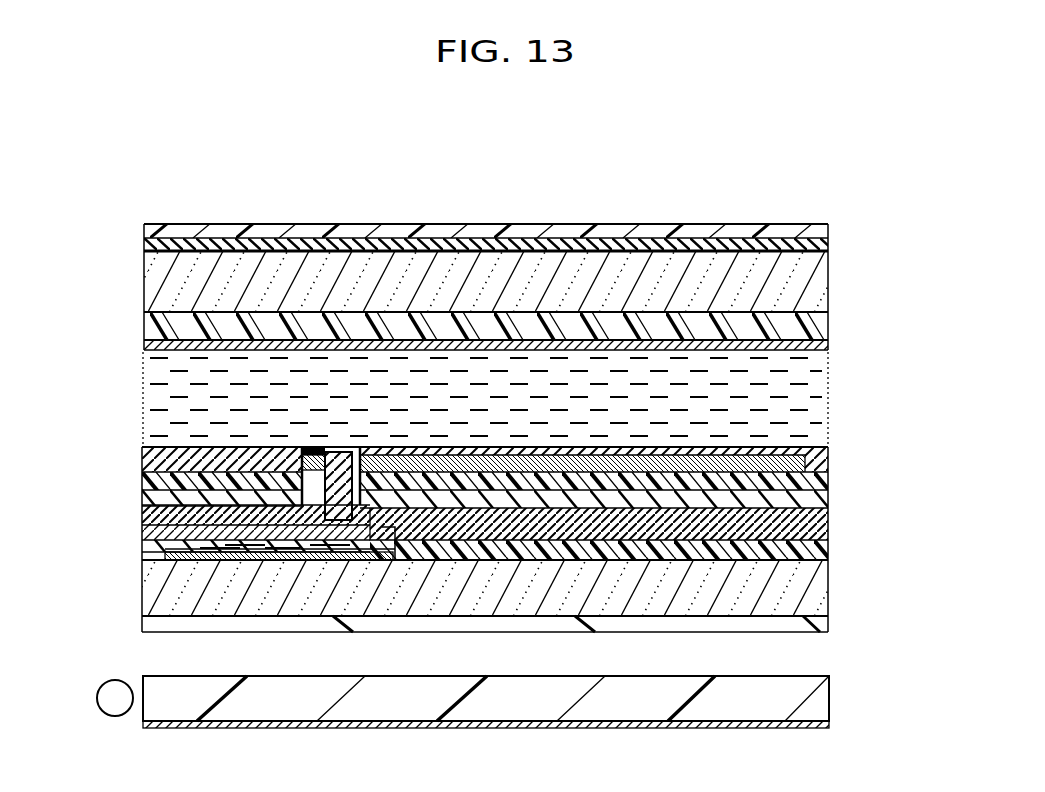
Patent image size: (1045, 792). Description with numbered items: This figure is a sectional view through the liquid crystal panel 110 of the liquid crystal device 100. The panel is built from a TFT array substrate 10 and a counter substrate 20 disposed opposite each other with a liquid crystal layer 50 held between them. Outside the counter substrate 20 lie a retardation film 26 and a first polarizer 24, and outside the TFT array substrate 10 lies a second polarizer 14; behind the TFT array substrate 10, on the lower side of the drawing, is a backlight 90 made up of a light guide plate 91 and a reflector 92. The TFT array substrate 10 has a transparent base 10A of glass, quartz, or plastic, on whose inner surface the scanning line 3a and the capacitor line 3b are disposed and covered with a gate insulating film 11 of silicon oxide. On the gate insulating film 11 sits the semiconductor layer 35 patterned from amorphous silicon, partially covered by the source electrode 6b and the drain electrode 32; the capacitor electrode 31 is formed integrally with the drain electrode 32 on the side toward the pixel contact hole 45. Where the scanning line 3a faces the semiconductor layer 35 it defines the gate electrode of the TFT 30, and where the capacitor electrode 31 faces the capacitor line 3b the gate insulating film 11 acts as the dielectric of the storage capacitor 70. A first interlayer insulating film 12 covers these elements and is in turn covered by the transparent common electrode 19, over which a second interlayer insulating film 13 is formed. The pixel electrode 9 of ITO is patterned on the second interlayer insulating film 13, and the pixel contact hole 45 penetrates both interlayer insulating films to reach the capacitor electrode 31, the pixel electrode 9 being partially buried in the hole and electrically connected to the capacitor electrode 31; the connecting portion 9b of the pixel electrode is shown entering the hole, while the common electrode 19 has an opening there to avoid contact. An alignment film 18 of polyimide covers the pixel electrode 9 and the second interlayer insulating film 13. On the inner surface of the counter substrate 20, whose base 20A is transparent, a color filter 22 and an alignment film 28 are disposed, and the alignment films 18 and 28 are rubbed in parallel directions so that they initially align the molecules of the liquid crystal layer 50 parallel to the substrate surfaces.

The liquid crystal device 100 is at (717, 226).
The liquid crystal panel 110 is at (91, 282).
The counter substrate 20 is at (136, 225).
The first polarizer 24 is at (830, 230).
The retardation film 26 is at (830, 244).
The base 20A is at (830, 289).
The color filter 22 is at (828, 324).
The alignment film 28 is at (828, 348).
The liquid crystal layer 50 is at (830, 392).
The TFT array substrate 10 is at (136, 443).
The alignment film 18 is at (828, 452).
The second interlayer insulating film 13 is at (828, 476).
The common electrode 19 is at (262, 497).
The pixel electrode 9 is at (464, 455).
The contact portion of pixel electrode 9b is at (307, 454).
The pixel contact hole 45 is at (343, 454).
The first interlayer insulating film 12 is at (826, 530).
The gate insulating film 11 is at (828, 549).
The base 10A is at (828, 586).
The second polarizer 14 is at (828, 623).
The source electrode 6b is at (142, 507).
The storage capacitor 70 is at (396, 543).
The TFT 30 is at (186, 567).
The semiconductor layer 35 is at (218, 560).
The scanning line 3a is at (234, 548).
The drain electrode 32 is at (276, 548).
The capacitor line 3b is at (330, 548).
The capacitor electrode 31 is at (361, 548).
The backlight 90 is at (887, 682).
The light guide plate 91 is at (829, 692).
The reflector 92 is at (829, 722).